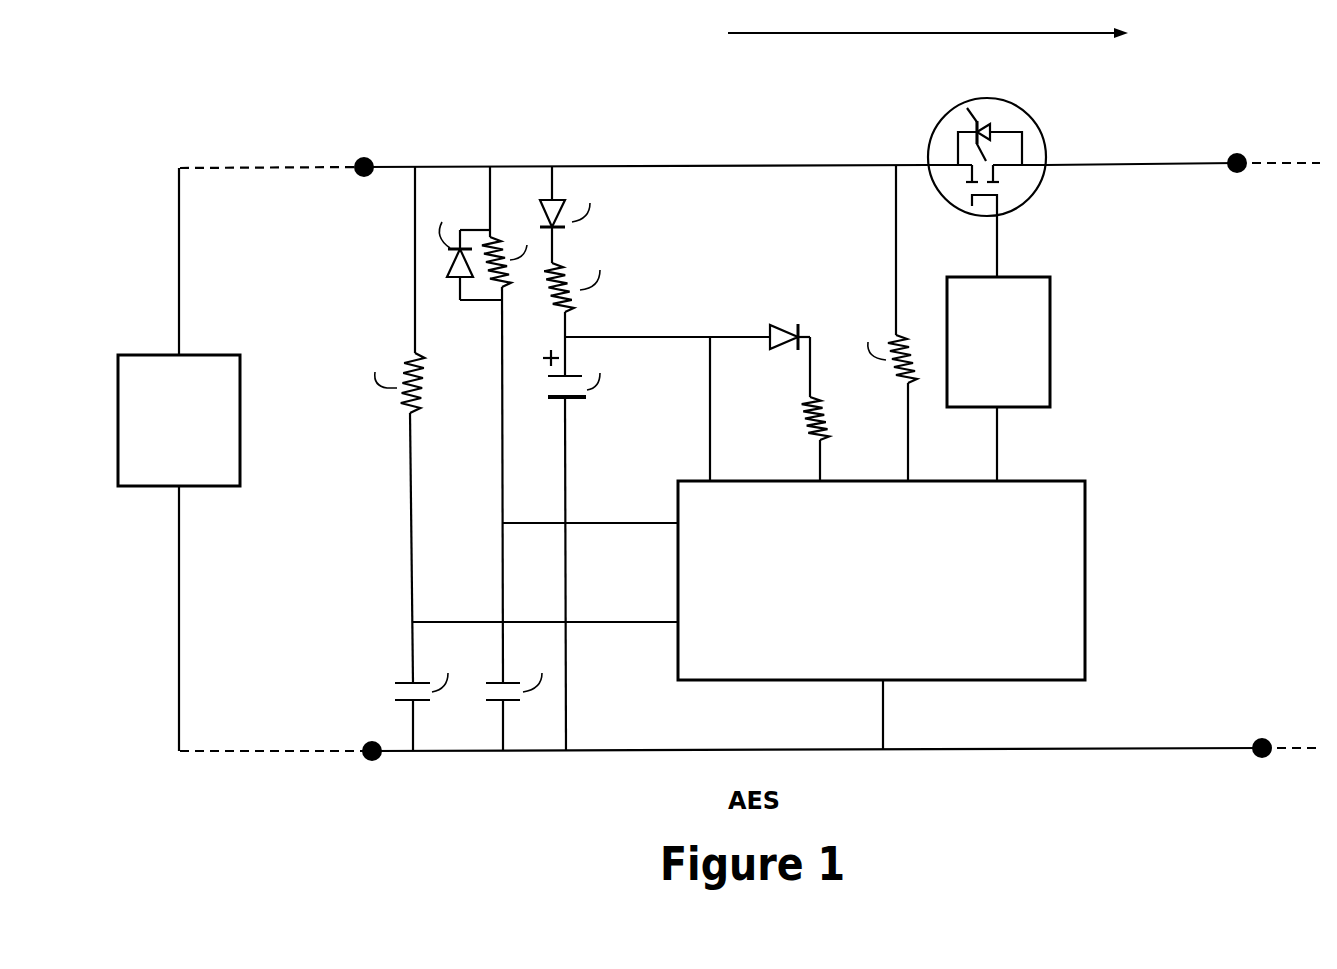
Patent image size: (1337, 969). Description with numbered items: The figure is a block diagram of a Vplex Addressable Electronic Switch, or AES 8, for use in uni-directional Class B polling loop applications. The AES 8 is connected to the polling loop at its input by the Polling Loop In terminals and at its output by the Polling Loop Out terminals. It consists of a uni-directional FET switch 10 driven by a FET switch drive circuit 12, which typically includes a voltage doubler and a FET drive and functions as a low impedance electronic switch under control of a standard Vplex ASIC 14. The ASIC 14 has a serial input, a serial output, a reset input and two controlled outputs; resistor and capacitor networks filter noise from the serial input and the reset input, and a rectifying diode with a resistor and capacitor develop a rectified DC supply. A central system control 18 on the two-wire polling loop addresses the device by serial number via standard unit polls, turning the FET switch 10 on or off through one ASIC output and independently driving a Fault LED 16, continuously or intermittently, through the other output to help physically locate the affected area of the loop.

The Vplex Addressable Electronic Switch (AES) 8 is at (465, 97).
The FET Switch 10 is at (1043, 130).
The FET switch drive circuit 12 is at (1053, 303).
The standard Vplex ASIC 14 is at (1087, 534).
The Fault LED 16 is at (773, 347).
The system control 18 is at (242, 406).